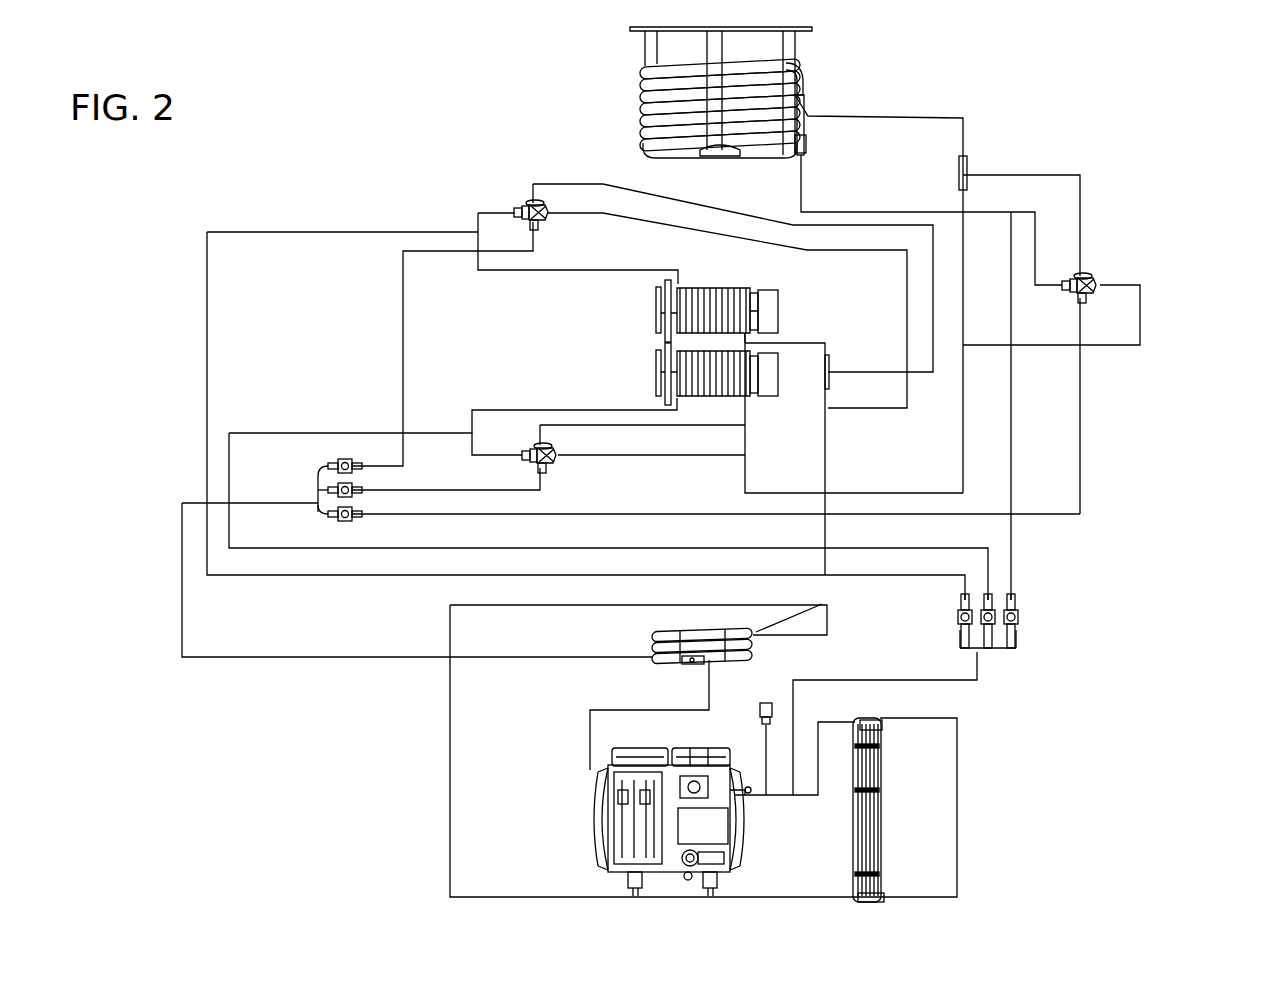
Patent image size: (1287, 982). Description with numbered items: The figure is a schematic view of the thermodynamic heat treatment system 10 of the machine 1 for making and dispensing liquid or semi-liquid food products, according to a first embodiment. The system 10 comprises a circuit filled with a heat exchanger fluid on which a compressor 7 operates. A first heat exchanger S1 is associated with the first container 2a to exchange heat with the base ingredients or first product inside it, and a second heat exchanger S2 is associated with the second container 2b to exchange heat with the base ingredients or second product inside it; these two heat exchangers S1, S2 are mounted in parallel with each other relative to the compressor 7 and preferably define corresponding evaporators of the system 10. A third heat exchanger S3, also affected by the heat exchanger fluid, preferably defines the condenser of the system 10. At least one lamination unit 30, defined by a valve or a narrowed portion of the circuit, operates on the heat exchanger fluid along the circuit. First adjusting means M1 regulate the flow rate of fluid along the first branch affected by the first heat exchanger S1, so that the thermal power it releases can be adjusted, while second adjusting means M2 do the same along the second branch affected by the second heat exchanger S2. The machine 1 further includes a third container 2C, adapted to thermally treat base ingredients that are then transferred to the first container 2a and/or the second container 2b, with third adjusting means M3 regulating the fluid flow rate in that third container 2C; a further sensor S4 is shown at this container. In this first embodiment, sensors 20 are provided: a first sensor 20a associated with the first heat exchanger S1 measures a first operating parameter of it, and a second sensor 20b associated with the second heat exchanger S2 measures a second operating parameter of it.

The machine 1 is at (1060, 100).
The thermodynamic heat treatment system 10 is at (1140, 433).
The third container 2C is at (820, 68).
The temperature sensor S4 is at (640, 110).
The lamination unit 30 is at (520, 202).
The first container 2a is at (648, 313).
The second container 2b is at (648, 372).
The first heat exchanger S1 is at (712, 282).
The second heat exchanger S2 is at (712, 402).
The thermoelectric module 20 is at (850, 366).
The first sensor 20a is at (760, 312).
The second sensor 20b is at (770, 375).
The first adjusting means M1 is at (346, 453).
The second adjusting means M2 is at (372, 498).
The third adjusting means M3 is at (347, 526).
The compressor 7 is at (588, 835).
The third heat exchanger S3 is at (888, 828).